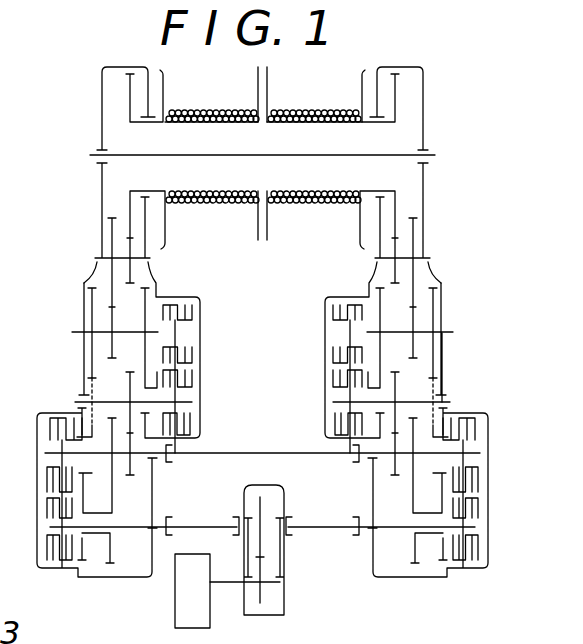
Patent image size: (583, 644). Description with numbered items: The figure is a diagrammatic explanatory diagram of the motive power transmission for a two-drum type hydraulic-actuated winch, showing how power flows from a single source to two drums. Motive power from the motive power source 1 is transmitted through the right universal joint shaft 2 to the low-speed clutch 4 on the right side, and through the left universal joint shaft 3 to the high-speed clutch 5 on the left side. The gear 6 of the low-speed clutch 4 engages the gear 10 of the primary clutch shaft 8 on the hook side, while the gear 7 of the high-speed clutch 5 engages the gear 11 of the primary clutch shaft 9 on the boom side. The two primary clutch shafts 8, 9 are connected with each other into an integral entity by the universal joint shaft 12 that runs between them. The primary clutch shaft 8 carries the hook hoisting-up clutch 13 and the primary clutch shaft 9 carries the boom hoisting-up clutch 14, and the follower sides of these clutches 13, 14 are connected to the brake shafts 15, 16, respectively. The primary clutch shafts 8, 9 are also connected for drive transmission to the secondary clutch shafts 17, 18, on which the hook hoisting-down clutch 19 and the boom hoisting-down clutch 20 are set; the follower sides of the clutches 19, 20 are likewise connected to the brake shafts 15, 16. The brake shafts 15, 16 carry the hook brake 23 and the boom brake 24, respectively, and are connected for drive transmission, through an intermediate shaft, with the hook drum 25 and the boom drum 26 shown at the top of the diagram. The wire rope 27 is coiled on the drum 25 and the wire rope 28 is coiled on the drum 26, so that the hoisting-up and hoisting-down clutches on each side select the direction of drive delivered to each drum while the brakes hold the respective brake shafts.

The motive power source 1 is at (175, 590).
The right universal joint shaft 2 is at (316, 522).
The left universal joint shaft 3 is at (197, 522).
The low-speed clutch 4 is at (466, 561).
The high-speed clutch 5 is at (57, 561).
The gear of low-speed clutch 6 is at (413, 513).
The gear of high-speed clutch 7 is at (113, 513).
The primary clutch shaft on the hook side 8 is at (392, 456).
The primary clutch shaft on the boom side 9 is at (133, 456).
The gear of hook-side primary clutch shaft 10 is at (412, 307).
The gear of boom-side primary clutch shaft 11 is at (118, 307).
The universal joint shaft 12 is at (222, 452).
The hook hoisting-up clutch 13 is at (483, 426).
The boom hoisting-up clutch 14 is at (42, 426).
The brake shaft 15 is at (427, 330).
The brake shaft 16 is at (97, 330).
The secondary clutch shaft 17 is at (428, 398).
The secondary clutch shaft 18 is at (98, 398).
The hook hoisting-down clutch 19 is at (326, 382).
The boom hoisting-down clutch 20 is at (199, 382).
The hook brake 23 is at (326, 313).
The boom brake 24 is at (199, 313).
The hook drum 25 is at (320, 122).
The boom drum 26 is at (222, 122).
The wire rope 27 is at (320, 112).
The wire rope 28 is at (222, 112).